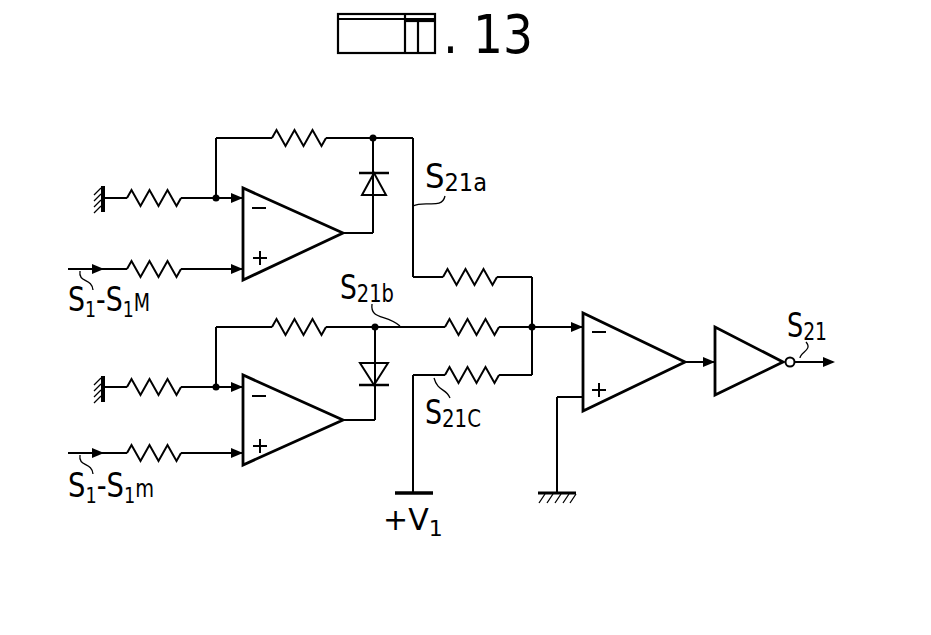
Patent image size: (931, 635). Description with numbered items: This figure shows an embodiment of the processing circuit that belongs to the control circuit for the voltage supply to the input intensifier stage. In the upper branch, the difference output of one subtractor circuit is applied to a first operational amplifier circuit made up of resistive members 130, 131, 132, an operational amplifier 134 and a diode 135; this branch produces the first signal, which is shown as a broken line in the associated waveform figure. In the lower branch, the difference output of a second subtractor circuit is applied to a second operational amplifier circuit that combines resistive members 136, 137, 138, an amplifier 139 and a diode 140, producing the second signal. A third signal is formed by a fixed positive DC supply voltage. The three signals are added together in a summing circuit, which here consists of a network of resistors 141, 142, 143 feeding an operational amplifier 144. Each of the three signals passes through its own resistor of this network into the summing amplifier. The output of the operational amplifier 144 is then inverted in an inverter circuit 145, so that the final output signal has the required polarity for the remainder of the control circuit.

The resistive member 130 is at (174, 192).
The resistive member 131 is at (174, 264).
The resistive member 132 is at (318, 133).
The operational amplifier 134 is at (296, 207).
The diode 135 is at (361, 180).
The resistive member 136 is at (174, 382).
The resistive member 137 is at (174, 448).
The resistive member 138 is at (318, 323).
The amplifier 139 is at (297, 400).
The diode 140 is at (360, 370).
The resistor 141 is at (479, 273).
The resistor 142 is at (463, 323).
The resistor 143 is at (478, 351).
The operational amplifier 144 is at (650, 341).
The inverter circuit 145 is at (755, 346).